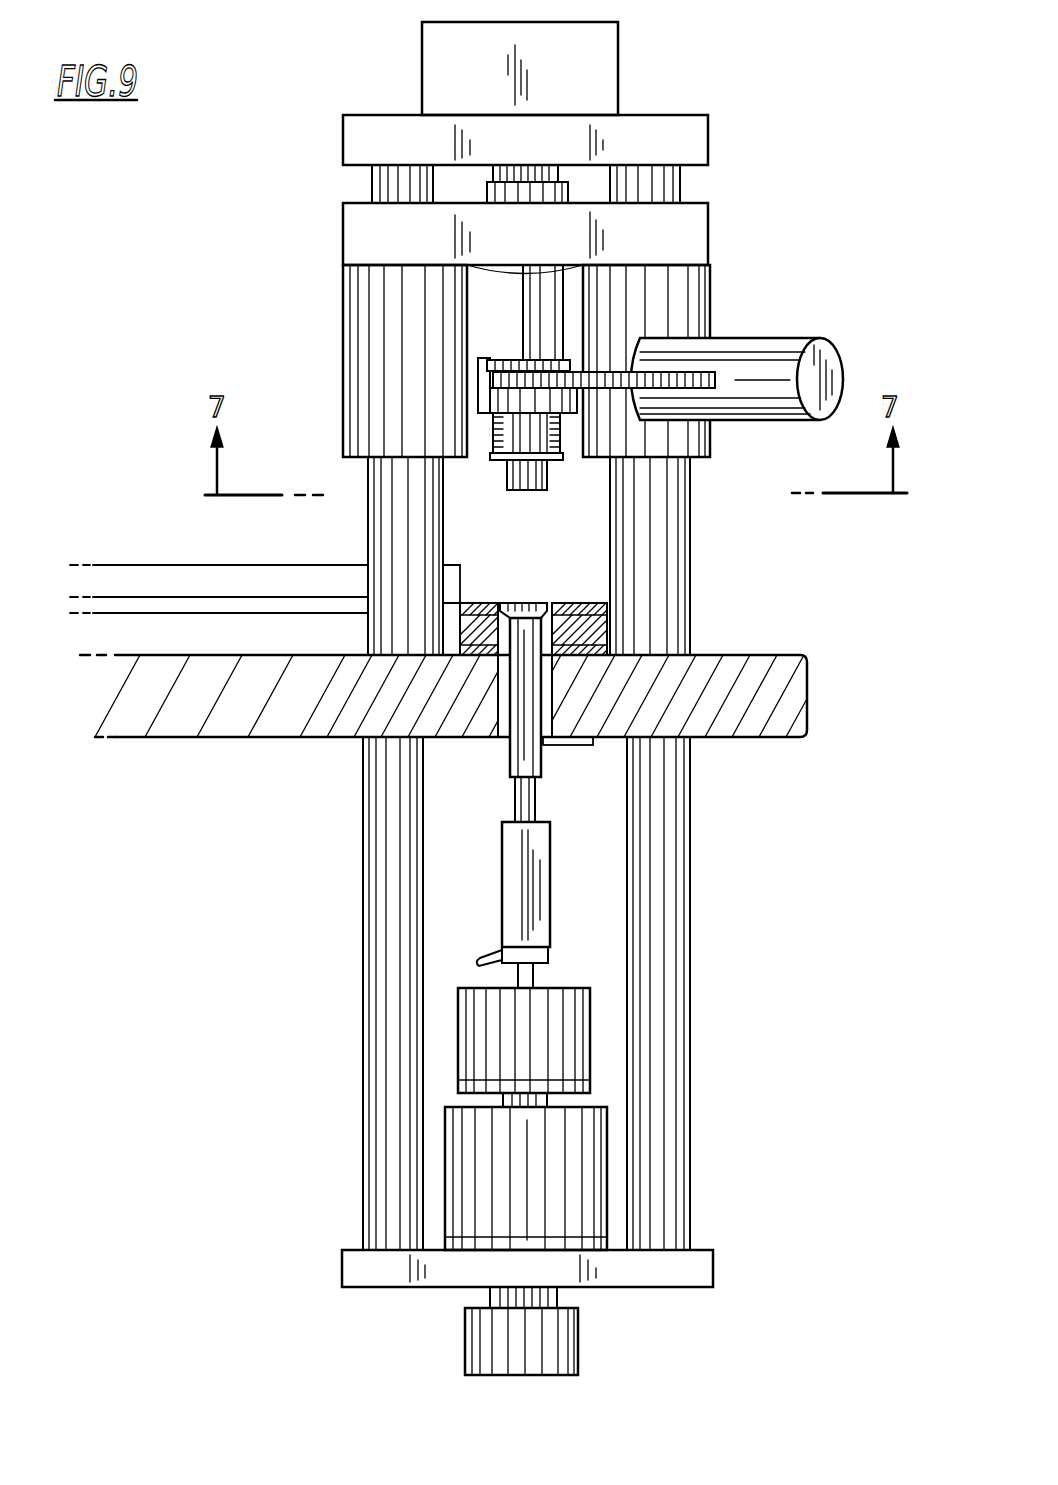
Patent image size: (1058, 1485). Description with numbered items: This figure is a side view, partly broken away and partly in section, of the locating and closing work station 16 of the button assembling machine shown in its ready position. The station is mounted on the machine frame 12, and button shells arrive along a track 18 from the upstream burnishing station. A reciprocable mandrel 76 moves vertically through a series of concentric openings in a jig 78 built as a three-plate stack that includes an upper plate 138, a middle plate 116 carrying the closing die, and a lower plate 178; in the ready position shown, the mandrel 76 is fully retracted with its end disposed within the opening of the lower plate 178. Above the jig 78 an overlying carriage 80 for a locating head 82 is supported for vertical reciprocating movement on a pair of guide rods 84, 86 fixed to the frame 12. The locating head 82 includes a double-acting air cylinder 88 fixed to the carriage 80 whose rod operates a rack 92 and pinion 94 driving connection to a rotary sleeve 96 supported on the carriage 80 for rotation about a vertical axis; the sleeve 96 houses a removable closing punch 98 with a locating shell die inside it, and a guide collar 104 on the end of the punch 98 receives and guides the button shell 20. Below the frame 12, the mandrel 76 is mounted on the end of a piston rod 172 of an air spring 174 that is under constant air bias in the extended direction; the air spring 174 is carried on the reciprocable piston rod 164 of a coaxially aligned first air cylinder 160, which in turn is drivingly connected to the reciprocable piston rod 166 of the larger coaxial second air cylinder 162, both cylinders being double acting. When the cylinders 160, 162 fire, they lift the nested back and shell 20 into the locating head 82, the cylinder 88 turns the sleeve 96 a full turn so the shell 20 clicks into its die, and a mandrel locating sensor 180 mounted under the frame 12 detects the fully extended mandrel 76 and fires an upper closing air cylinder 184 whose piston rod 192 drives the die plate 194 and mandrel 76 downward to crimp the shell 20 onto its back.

The frame 12 is at (773, 650).
The work station 16 is at (346, 68).
The track 18 is at (193, 556).
The shell 20 is at (523, 600).
The mandrel 76 is at (513, 672).
The jig 78 is at (563, 593).
The carriage 80 is at (336, 310).
The locating head 82 is at (488, 323).
The guide rod 84 is at (372, 183).
The guide rod 86 is at (682, 190).
The double-acting air cylinder 88 is at (776, 340).
The rack 92 is at (708, 378).
The pinion 94 is at (487, 375).
The rotary sleeve 96 is at (486, 413).
The punch 98 is at (548, 436).
The collar 104 is at (517, 480).
The middle plate 116 is at (607, 625).
The top plate 138 is at (607, 600).
The first air cylinder 160 is at (590, 1020).
The second air cylinder 162 is at (458, 1165).
The piston rod 164 is at (535, 978).
The piston rod 166 is at (547, 1100).
The piston rod 172 is at (537, 800).
The air spring 174 is at (502, 887).
The lower plate 178 is at (607, 647).
The mandrel locating sensor 180 is at (560, 746).
The upper closing air cylinder 184 is at (619, 92).
The piston rod 192 is at (493, 172).
The die plate 194 is at (708, 252).